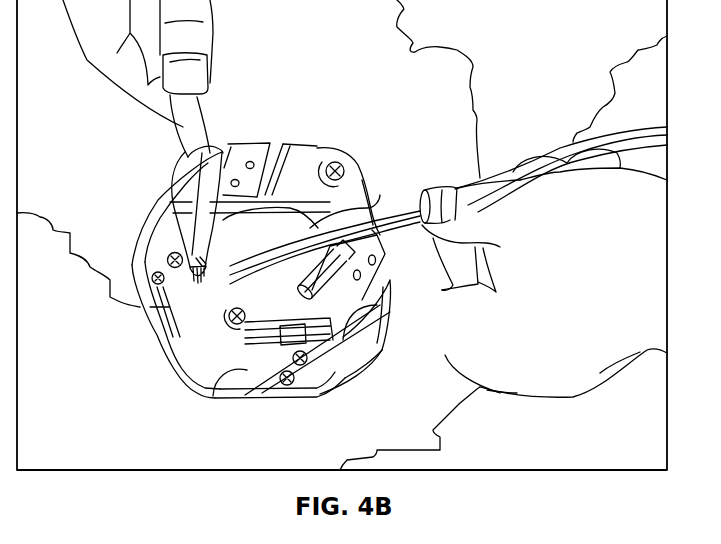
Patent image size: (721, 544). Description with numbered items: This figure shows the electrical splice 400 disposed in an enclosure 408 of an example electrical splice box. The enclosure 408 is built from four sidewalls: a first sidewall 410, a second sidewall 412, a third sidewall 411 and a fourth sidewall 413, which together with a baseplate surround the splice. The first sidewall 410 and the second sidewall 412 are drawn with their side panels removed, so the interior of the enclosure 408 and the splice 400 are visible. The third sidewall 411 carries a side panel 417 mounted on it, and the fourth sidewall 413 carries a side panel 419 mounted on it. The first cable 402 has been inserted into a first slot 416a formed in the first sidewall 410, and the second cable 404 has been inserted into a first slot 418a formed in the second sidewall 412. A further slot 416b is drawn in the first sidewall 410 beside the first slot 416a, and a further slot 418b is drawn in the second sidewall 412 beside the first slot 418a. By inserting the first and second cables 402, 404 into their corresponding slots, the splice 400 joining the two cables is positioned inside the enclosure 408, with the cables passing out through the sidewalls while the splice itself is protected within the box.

The electrical splice 400 is at (388, 283).
The first cable 402 is at (180, 126).
The second cable 404 is at (572, 143).
The enclosure 408 is at (150, 207).
The first sidewall 410 is at (276, 114).
The third sidewall 411 is at (222, 376).
The second sidewall 412 is at (404, 252).
The fourth sidewall 413 is at (175, 358).
The first slot 416a is at (234, 140).
The mounting tab 416b is at (284, 144).
The side panel 417 is at (272, 370).
The first slot 418a is at (391, 209).
The blade tab 418b is at (400, 273).
The side panel 419 is at (150, 307).